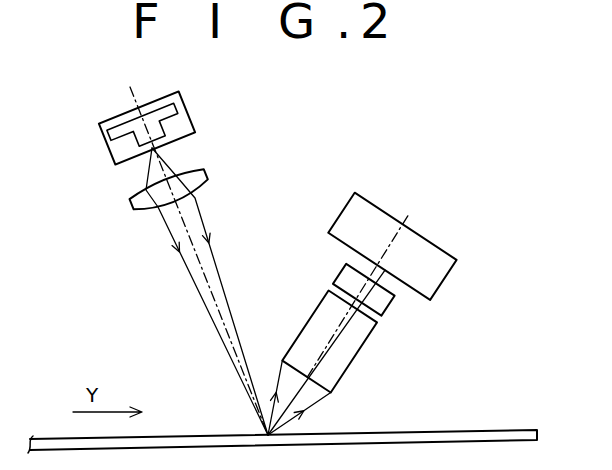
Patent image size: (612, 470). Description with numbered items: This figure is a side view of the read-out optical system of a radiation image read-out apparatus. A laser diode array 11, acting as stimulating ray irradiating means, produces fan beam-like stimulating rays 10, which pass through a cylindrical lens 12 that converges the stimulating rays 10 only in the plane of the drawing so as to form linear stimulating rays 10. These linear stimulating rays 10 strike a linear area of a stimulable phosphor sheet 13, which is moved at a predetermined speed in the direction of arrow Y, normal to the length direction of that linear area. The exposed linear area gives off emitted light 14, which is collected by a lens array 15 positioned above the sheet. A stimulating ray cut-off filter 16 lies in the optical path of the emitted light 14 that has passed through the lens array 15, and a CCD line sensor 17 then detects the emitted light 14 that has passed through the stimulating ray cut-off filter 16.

The stimulating rays 10 is at (168, 165).
The laser diode array 11 is at (191, 109).
The cylindrical lens 12 is at (207, 176).
The stimulable phosphor sheet 13 is at (485, 430).
The emitted light 14 is at (318, 403).
The lens array 15 is at (367, 333).
The stimulating ray cut-off filter 16 is at (392, 296).
The CCD line sensor 17 is at (452, 263).